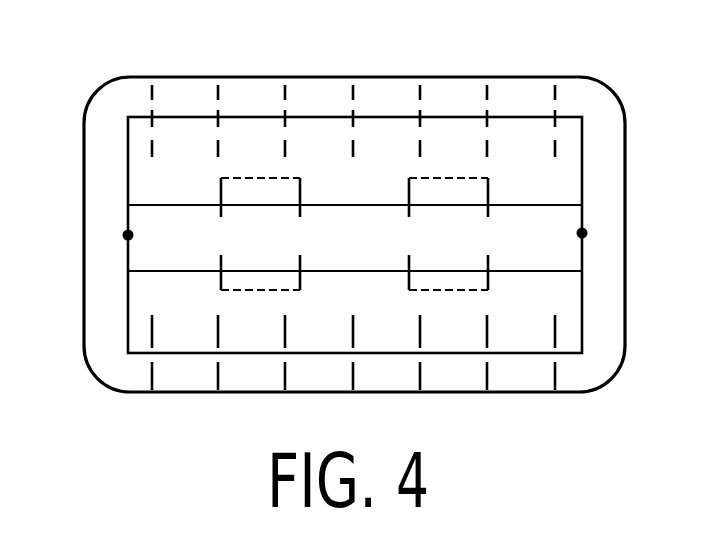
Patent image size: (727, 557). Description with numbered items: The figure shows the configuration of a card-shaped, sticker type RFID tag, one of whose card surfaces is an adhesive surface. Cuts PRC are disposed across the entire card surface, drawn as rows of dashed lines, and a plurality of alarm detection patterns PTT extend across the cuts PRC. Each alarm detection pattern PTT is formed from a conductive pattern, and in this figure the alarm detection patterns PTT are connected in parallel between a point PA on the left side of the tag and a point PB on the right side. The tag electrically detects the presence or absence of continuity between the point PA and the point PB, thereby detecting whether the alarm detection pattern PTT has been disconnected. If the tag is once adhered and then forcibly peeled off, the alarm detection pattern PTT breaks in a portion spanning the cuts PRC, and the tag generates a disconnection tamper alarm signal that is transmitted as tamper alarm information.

The point PA is at (126, 233).
The point PB is at (584, 230).
The cuts PRC is at (421, 92).
The alarm detection pattern PTT is at (517, 115).